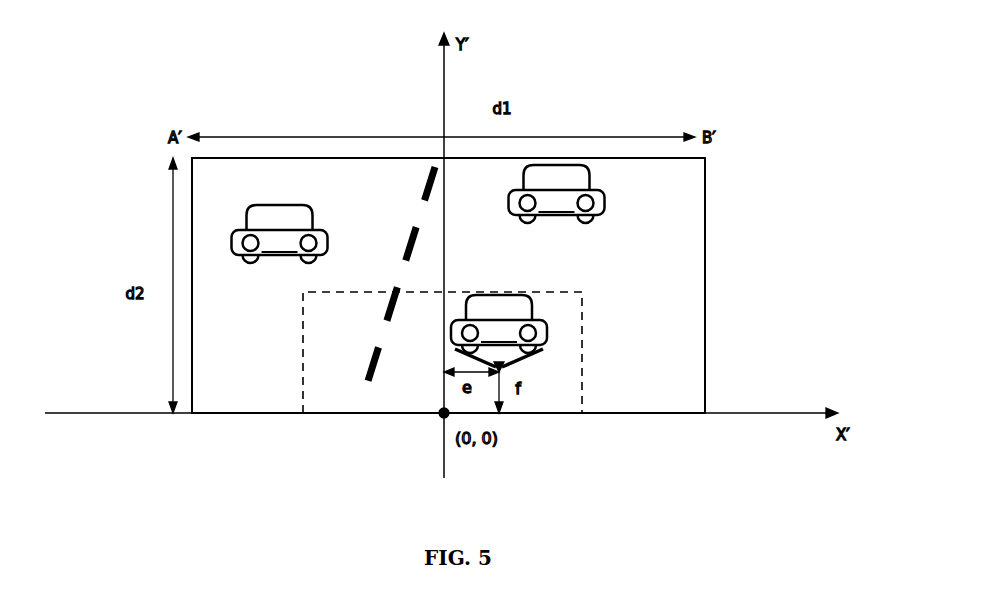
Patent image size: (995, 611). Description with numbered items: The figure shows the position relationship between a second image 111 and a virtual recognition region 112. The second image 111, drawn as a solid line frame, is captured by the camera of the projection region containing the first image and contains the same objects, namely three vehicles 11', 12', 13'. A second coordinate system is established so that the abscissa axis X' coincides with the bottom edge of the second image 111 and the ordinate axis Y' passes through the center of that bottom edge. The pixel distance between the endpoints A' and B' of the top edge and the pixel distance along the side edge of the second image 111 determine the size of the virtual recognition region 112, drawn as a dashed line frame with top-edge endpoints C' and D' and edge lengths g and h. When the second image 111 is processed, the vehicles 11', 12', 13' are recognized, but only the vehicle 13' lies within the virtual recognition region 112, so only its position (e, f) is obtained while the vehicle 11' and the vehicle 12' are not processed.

The second image 111 is at (705, 252).
The virtual recognition region 112 is at (582, 372).
The vehicle 11' is at (280, 234).
The vehicle 12' is at (557, 194).
The vehicle 13' is at (499, 333).